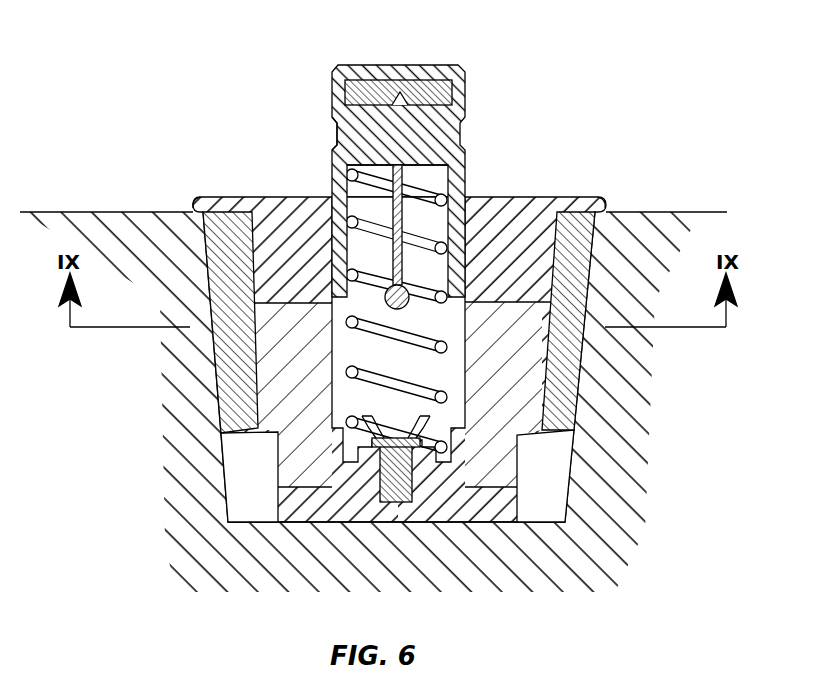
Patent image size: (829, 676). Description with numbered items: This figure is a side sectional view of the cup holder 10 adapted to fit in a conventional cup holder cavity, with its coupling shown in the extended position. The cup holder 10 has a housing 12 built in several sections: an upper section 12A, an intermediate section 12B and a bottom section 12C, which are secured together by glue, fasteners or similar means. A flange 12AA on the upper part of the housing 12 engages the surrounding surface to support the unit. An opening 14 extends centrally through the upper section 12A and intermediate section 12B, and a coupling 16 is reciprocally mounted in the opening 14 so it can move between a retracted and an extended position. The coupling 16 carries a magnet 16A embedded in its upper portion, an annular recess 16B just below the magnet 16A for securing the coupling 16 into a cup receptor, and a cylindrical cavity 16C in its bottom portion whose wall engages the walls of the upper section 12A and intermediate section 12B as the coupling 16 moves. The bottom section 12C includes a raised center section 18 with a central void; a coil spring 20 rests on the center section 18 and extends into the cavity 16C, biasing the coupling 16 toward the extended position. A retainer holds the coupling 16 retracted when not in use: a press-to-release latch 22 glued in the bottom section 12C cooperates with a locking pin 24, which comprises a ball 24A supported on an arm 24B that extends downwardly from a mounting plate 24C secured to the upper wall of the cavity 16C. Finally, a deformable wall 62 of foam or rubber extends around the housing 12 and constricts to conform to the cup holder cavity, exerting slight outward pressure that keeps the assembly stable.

The cup holder 10 is at (376, 312).
The housing 12 is at (376, 367).
The upper section 12A is at (292, 212).
The flange 12AA is at (195, 204).
The intermediate section 12B is at (292, 372).
The bottom section 12C is at (487, 507).
The opening 14 is at (318, 428).
The coupling 16 is at (400, 164).
The magnet 16A is at (345, 82).
The annular recess 16B is at (336, 132).
The cylindrical cavity 16C is at (426, 214).
The raised center section 18 is at (362, 434).
The coil spring 20 is at (447, 352).
The press-to-release latch 22 is at (412, 492).
The locking pin 24 is at (533, 157).
The ball 24A is at (410, 292).
The arm 24B is at (405, 247).
The mounting plate 24C is at (424, 206).
The deformable wall 62 is at (232, 346).